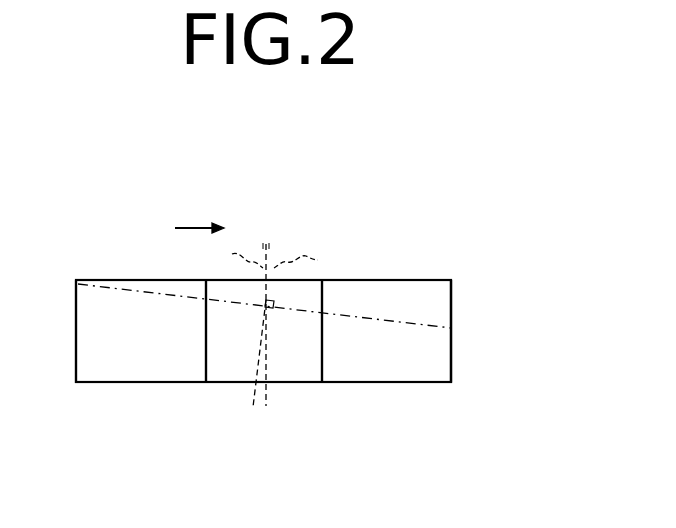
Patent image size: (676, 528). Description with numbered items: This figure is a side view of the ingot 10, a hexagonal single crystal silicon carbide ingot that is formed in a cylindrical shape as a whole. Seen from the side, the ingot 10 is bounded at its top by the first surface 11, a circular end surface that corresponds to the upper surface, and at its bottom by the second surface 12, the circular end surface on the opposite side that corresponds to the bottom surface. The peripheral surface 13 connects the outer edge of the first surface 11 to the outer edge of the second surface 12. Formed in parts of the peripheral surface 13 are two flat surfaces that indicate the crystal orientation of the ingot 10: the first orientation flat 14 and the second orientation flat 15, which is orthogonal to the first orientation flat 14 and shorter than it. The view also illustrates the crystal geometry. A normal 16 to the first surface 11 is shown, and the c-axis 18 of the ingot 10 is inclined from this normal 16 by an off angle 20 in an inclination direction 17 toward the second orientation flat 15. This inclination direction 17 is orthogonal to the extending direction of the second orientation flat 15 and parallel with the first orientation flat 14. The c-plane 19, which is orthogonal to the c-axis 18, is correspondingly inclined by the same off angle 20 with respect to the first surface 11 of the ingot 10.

The ingot 10 is at (458, 221).
The first surface 11 is at (101, 280).
The second surface 12 is at (100, 383).
The peripheral surface 13 is at (170, 363).
The first orientation flat 14 is at (297, 365).
The second orientation flat 15 is at (452, 305).
The normal 16 is at (237, 258).
The inclination direction 17 is at (199, 214).
The c-axis 18 is at (309, 260).
The c-plane 19 is at (143, 292).
The off angle 20 is at (266, 244).